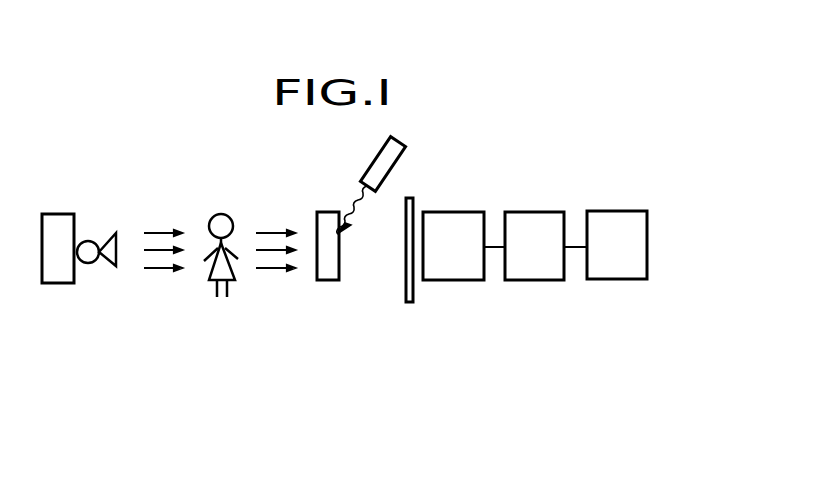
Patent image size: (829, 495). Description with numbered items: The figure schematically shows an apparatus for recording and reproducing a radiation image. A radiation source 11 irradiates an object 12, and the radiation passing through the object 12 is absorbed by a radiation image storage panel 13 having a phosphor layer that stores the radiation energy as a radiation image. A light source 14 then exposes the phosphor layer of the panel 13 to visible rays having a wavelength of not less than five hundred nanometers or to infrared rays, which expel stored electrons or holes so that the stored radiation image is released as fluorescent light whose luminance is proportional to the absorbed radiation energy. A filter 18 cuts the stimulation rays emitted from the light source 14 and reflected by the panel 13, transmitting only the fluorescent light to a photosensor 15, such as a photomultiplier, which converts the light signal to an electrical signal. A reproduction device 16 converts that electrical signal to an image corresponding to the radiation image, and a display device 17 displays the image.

The radiation source 11 is at (59, 283).
The object 12 is at (208, 274).
The radiation image storage panel 13 is at (327, 280).
The light source 14 is at (399, 157).
The photosensor 15 is at (465, 280).
The reproduction device 16 is at (543, 280).
The display device 17 is at (627, 279).
The filter 18 is at (405, 292).